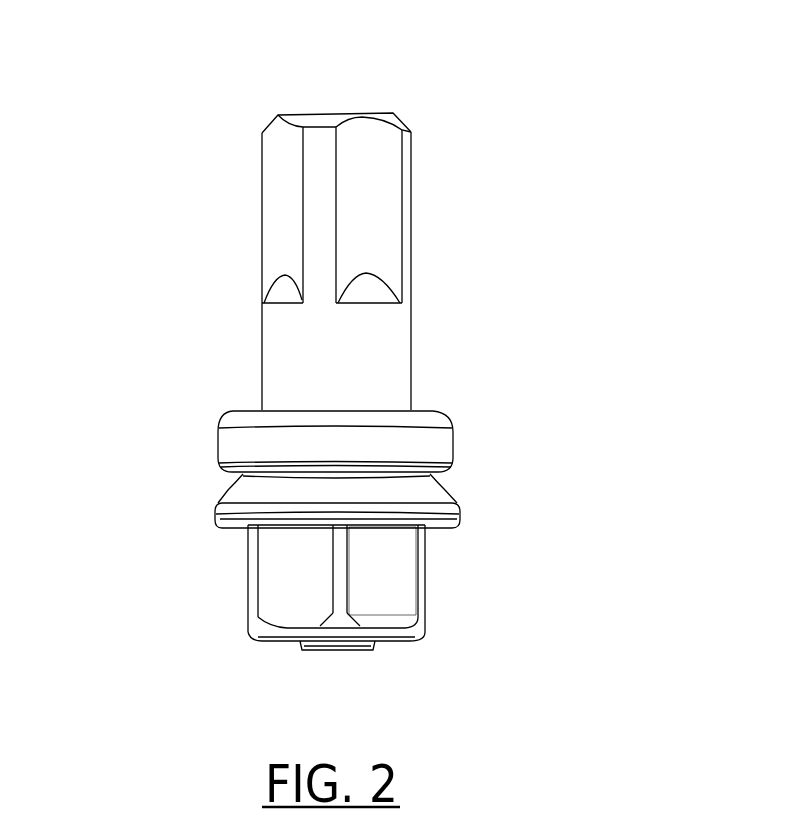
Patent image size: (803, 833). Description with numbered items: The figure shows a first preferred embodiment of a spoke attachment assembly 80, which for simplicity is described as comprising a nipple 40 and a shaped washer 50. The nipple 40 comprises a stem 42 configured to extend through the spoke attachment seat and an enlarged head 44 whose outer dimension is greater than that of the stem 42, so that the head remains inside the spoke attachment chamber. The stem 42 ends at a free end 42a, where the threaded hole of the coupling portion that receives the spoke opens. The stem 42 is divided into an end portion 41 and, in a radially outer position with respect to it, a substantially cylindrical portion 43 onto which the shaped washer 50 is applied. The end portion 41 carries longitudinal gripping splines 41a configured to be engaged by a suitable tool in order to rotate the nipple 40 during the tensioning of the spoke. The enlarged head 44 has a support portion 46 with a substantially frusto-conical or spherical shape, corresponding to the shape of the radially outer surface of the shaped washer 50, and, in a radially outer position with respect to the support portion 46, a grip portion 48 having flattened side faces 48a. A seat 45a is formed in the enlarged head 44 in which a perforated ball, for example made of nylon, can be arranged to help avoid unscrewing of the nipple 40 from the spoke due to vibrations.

The spoke attachment assembly 80 is at (541, 81).
The nipple 40 is at (197, 593).
The end portion 41 is at (414, 190).
The longitudinal gripping splines 41a is at (275, 188).
The stem 42 is at (469, 290).
The free end 42a is at (290, 110).
The substantially cylindrical portion 43 is at (414, 348).
The enlarged head 44 is at (494, 527).
The seat 45a is at (299, 648).
The support portion 46 is at (238, 493).
The grip portion 48 is at (425, 582).
The flattened side faces 48a is at (393, 593).
The shaped washer 50 is at (432, 445).